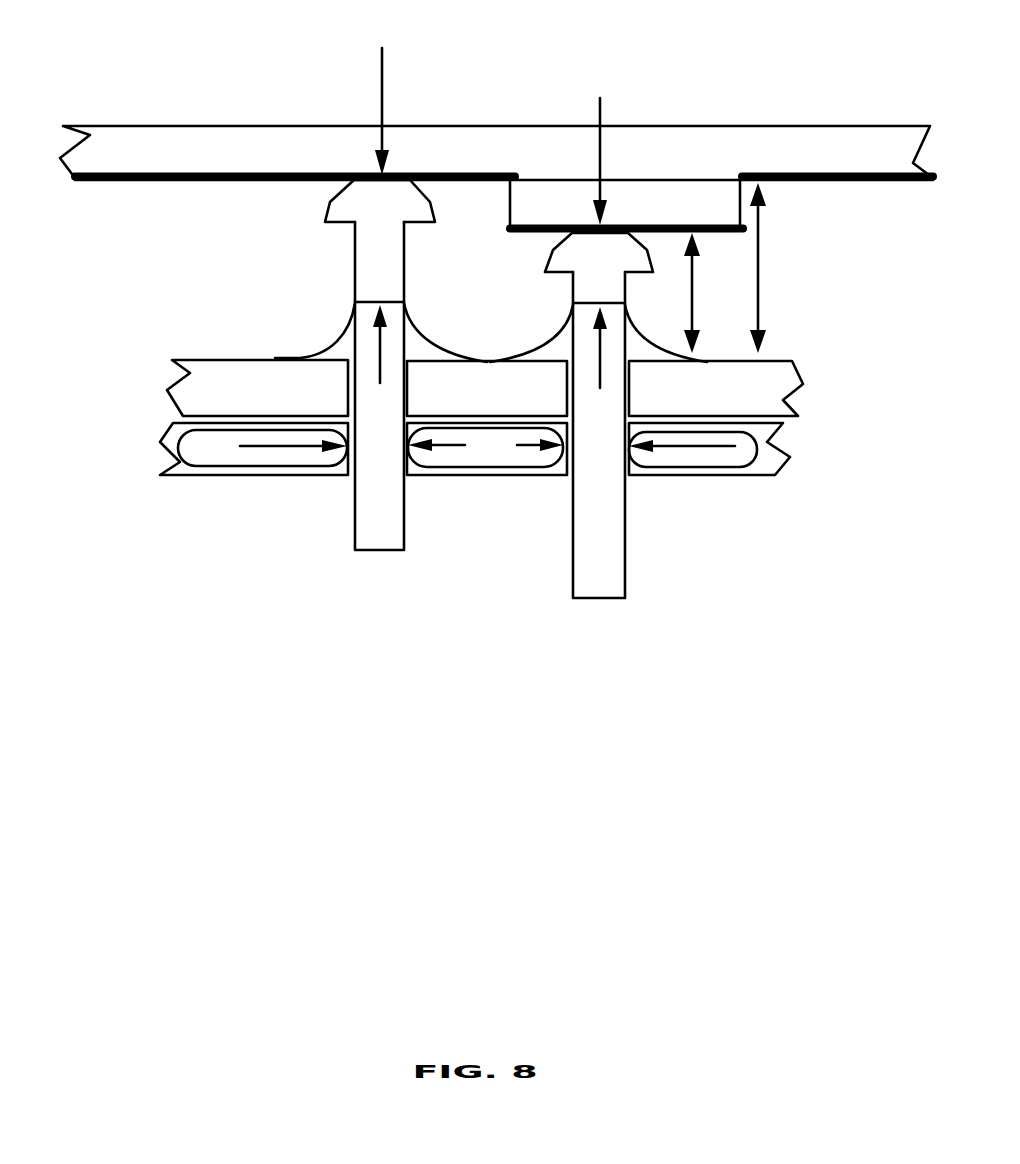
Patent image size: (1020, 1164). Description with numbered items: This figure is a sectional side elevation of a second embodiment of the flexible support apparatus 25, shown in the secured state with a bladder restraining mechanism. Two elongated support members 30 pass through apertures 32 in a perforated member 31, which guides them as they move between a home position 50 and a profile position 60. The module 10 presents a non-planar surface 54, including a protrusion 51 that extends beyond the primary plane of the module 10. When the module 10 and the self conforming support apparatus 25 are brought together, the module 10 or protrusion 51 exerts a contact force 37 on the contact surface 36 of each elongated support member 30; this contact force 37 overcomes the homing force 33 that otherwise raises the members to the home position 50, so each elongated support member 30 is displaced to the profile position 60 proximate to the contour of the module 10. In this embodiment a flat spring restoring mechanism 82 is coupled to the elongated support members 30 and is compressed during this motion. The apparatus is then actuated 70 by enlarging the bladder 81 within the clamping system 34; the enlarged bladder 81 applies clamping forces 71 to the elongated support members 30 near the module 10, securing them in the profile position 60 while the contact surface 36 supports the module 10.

The module 10 is at (803, 157).
The flexible support apparatus 25 is at (132, 611).
The elongated support member 30 is at (383, 492).
The perforated member 31 is at (758, 392).
The aperture 32 is at (348, 357).
The homing force 33 is at (573, 360).
The clamping system 34 is at (767, 447).
The contact surface 36 is at (377, 172).
The contact force 37 is at (598, 163).
The home position 50 is at (763, 238).
The protrusion 51 is at (638, 200).
The non-planar surface 54 is at (255, 176).
The profile position 60 is at (697, 297).
The actuation 70 is at (187, 448).
The clamping force 71 is at (530, 443).
The bladder 81 is at (230, 447).
The flat spring restoring mechanism 82 is at (310, 352).